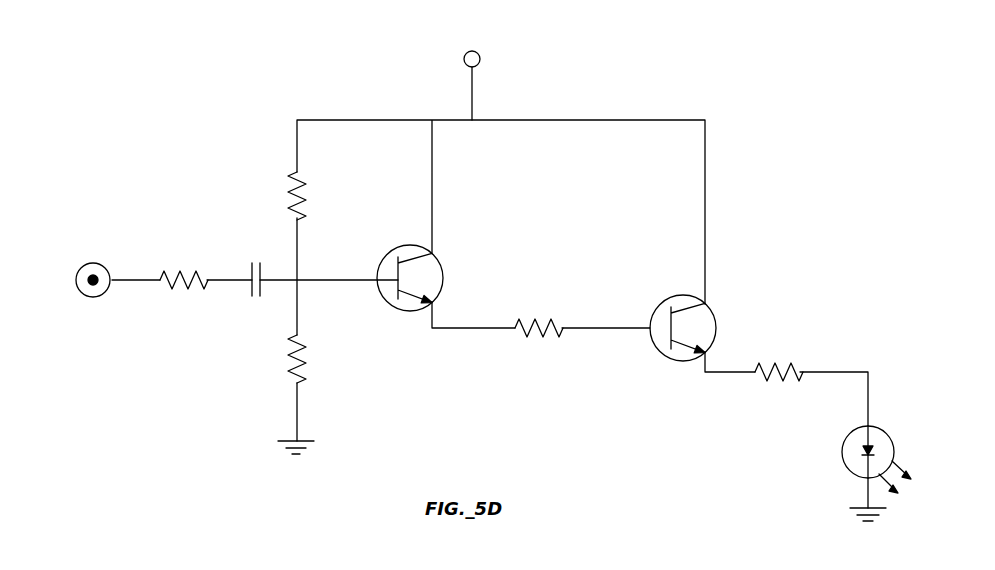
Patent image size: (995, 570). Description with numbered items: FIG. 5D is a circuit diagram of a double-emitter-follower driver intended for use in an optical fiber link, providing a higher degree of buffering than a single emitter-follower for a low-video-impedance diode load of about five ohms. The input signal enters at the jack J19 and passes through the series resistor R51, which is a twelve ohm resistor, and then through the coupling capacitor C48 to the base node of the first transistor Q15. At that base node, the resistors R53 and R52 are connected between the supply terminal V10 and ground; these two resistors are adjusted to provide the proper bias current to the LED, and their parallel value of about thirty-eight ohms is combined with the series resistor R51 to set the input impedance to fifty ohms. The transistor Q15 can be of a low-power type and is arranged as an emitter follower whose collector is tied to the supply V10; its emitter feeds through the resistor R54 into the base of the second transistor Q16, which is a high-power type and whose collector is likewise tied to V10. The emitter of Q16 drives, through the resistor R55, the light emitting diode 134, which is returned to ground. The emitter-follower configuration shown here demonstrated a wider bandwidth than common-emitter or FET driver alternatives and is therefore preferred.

The supply voltage terminal V10 is at (480, 59).
The input jack J19 is at (93, 263).
The series resistor R51 is at (190, 287).
The coupling capacitor C48 is at (250, 268).
The resistor R53 is at (303, 210).
The resistor R52 is at (303, 355).
The transistor Q15 is at (446, 277).
The resistor R54 is at (543, 332).
The transistor Q16 is at (715, 312).
The resistor R55 is at (793, 365).
The light emitting diode 134 is at (852, 432).